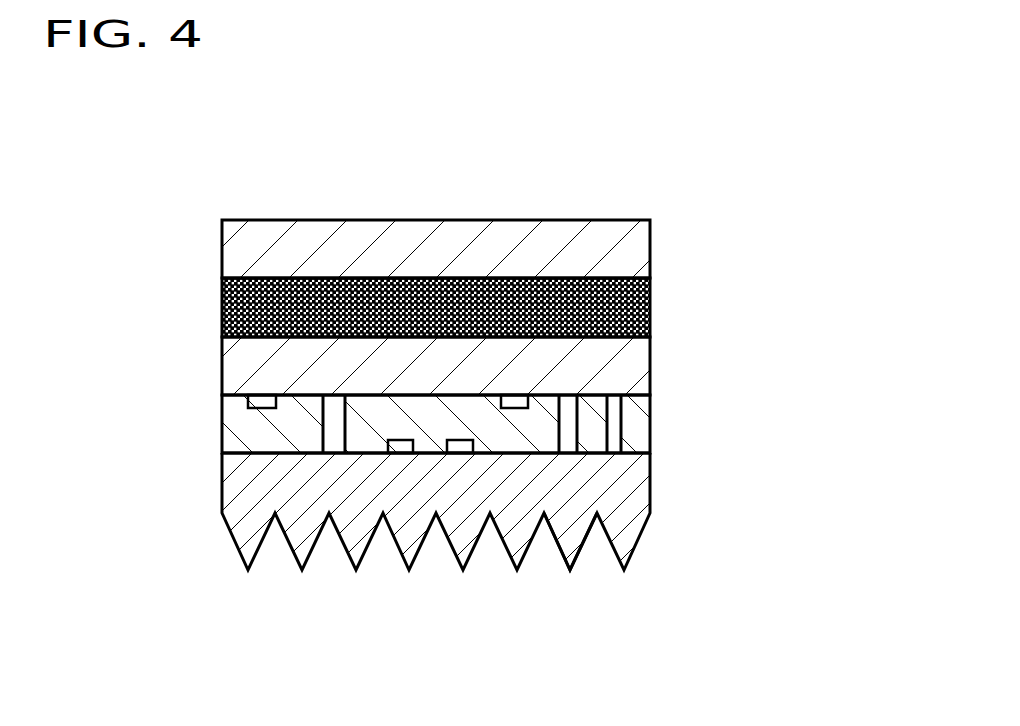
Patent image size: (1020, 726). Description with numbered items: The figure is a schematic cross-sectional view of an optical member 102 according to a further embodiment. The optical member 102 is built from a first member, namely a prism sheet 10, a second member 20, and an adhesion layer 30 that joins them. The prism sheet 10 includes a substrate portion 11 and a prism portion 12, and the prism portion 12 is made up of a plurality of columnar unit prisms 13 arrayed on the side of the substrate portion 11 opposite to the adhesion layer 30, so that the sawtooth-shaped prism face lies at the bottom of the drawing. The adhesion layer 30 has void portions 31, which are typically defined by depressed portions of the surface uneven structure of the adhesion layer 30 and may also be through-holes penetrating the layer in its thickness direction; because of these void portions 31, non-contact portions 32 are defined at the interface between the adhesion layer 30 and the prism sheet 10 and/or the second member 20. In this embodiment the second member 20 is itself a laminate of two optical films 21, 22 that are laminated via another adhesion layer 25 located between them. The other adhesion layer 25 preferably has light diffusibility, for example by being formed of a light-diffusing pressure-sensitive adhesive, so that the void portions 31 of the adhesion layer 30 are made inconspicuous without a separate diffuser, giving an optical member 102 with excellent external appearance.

The optical member 102 is at (640, 156).
The second member 20 is at (765, 215).
The optical film 21 is at (640, 252).
The other adhesion layer 25 is at (640, 302).
The optical film 22 is at (640, 360).
The adhesion layer 30 is at (640, 423).
The void portion 31 is at (261, 401).
The non-contact portion 32 is at (330, 427).
The first member (prism sheet) 10 is at (765, 463).
The substrate portion 11 is at (633, 480).
The prism portion 12 is at (643, 528).
The unit prism 13 is at (573, 535).